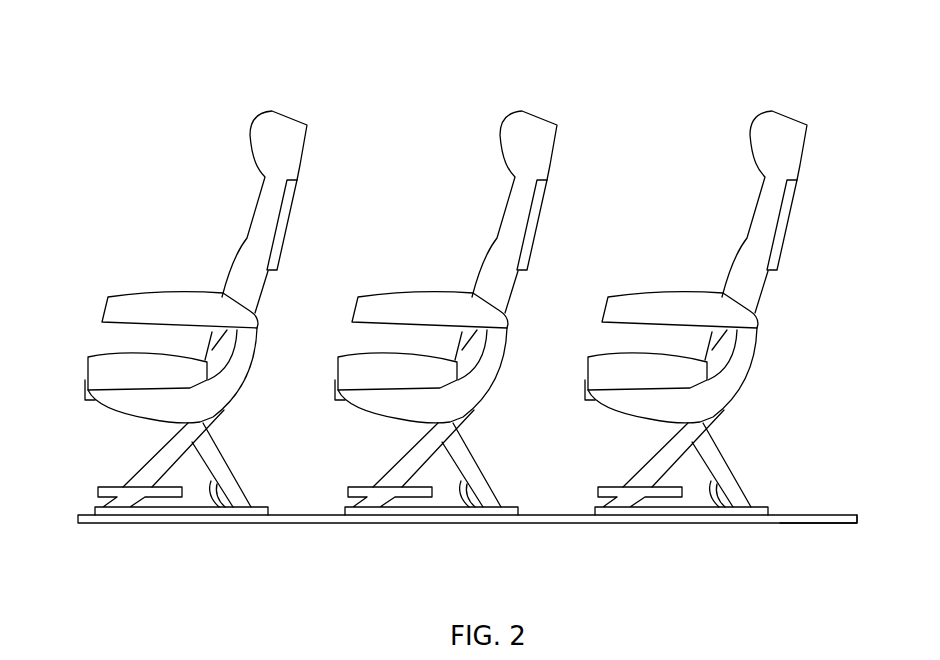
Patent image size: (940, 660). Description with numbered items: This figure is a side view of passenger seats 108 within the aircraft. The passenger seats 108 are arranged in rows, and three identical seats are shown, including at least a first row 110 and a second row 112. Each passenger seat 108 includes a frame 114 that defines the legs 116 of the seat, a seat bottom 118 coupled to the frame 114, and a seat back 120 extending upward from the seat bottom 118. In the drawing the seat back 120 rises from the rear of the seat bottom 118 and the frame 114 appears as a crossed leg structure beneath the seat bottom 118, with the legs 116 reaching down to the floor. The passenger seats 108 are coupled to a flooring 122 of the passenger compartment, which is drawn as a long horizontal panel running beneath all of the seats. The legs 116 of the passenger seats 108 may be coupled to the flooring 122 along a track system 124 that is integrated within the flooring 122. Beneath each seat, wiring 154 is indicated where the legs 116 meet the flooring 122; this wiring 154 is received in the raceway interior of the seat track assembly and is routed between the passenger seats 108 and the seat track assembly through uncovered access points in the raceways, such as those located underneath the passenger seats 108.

The passenger seat 108 is at (320, 118).
The first row 110 is at (797, 77).
The second row 112 is at (547, 77).
The frame 114 is at (206, 429).
The legs 116 is at (138, 473).
The seat bottom 118 is at (90, 358).
The seat back 120 is at (300, 165).
The flooring 122 is at (798, 513).
The track system 124 is at (855, 498).
The wiring 154 is at (210, 503).